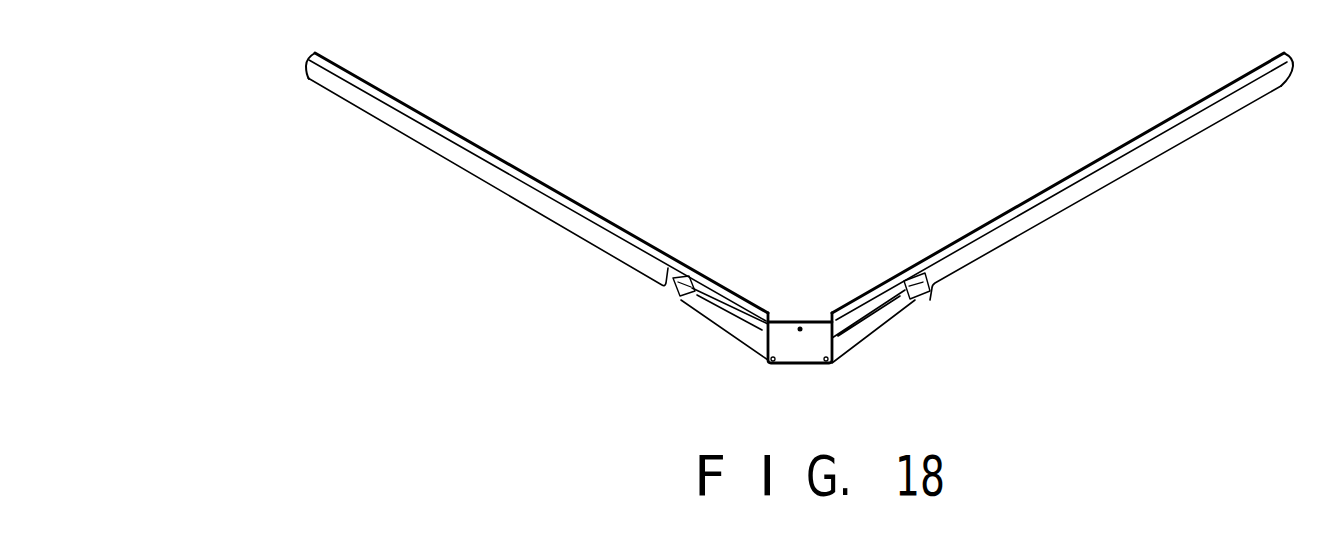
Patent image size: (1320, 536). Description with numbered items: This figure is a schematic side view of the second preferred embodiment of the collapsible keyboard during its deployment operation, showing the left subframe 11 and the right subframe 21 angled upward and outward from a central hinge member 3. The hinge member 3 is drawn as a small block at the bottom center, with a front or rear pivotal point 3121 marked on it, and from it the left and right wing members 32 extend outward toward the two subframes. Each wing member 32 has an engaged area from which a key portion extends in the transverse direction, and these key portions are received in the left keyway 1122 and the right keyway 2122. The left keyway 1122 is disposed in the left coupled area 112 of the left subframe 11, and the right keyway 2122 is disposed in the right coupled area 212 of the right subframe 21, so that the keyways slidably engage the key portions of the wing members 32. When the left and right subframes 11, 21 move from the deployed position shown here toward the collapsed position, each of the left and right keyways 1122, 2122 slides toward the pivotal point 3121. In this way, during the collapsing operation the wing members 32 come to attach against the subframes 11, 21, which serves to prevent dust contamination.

The left subframe 11 is at (537, 194).
The left coupled area 112 is at (524, 192).
The left keyway 1122 is at (686, 295).
The hinge member 3 is at (821, 320).
The wing member 32 is at (733, 327).
The pivotal point 3121 is at (842, 272).
The right subframe 21 is at (1062, 202).
The right coupled area 212 is at (1007, 237).
The right keyway 2122 is at (913, 286).